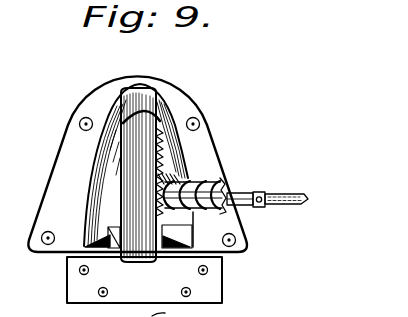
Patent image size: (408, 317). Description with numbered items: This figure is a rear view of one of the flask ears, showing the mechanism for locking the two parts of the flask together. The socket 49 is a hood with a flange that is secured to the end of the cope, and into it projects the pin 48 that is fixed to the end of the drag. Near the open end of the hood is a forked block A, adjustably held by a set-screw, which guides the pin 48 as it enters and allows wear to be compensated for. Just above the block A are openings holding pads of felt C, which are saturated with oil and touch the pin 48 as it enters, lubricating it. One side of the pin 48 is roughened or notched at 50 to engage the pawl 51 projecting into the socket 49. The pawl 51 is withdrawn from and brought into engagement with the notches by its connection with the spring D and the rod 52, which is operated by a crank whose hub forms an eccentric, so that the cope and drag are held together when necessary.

The standard or pin 48 is at (235, 280).
The socket 49 is at (212, 135).
The roughened or notched portion 50 is at (159, 134).
The pawl 51 is at (246, 188).
The rod 52 is at (277, 195).
The spring D is at (217, 181).
The pads of felt C is at (115, 218).
The forked block A is at (190, 239).